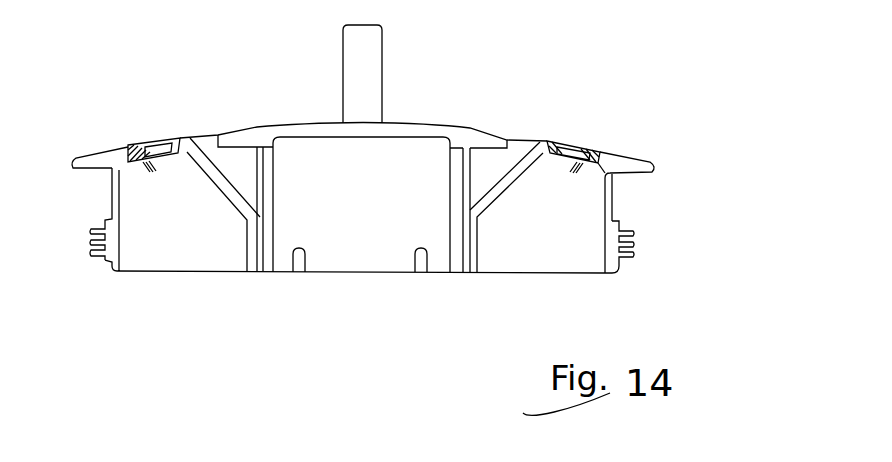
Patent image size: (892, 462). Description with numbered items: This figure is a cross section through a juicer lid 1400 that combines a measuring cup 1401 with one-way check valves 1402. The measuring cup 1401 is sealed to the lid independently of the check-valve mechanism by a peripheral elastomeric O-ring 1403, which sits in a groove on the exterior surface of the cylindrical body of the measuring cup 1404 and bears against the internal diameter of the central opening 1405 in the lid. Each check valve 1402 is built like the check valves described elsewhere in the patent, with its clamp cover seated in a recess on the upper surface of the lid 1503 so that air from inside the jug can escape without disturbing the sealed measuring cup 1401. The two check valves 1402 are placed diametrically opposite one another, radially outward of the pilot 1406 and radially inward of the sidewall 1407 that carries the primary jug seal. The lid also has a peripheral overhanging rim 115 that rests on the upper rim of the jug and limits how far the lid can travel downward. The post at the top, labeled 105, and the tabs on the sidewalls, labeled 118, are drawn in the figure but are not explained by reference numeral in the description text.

The peripheral overhanging rim 115 is at (92, 157).
The post 105 is at (350, 72).
The measuring cup 1401 is at (433, 128).
The check valve 1402 is at (568, 143).
The juicer lid 1400 is at (610, 153).
The lid 1503 is at (626, 152).
The sidewall 1407 is at (613, 204).
The connector tabs 118 is at (633, 244).
The pilot 1406 is at (517, 180).
The O-ring 1403 is at (477, 220).
The cylindrical body of the measuring cup 1404 is at (275, 217).
The central opening 1405 is at (245, 237).